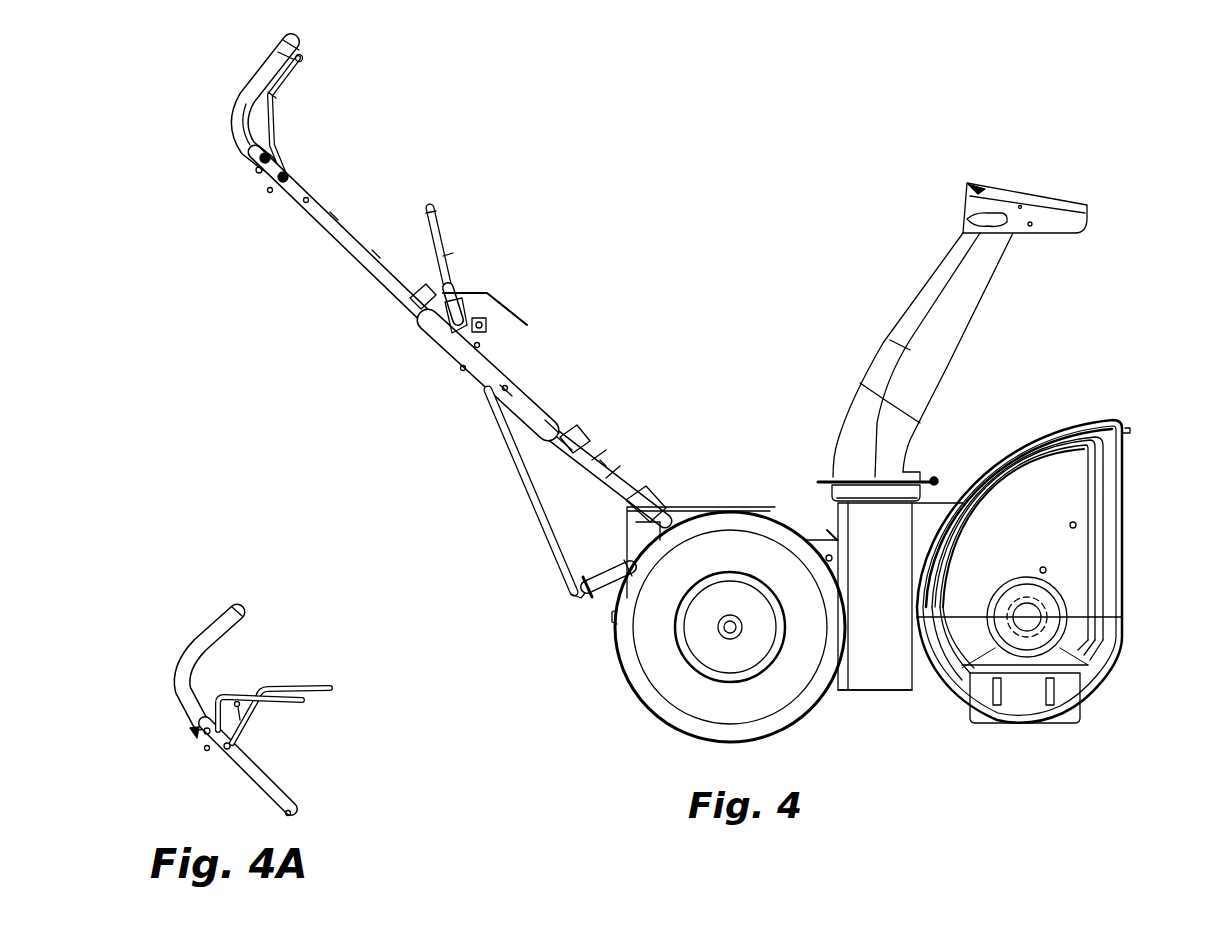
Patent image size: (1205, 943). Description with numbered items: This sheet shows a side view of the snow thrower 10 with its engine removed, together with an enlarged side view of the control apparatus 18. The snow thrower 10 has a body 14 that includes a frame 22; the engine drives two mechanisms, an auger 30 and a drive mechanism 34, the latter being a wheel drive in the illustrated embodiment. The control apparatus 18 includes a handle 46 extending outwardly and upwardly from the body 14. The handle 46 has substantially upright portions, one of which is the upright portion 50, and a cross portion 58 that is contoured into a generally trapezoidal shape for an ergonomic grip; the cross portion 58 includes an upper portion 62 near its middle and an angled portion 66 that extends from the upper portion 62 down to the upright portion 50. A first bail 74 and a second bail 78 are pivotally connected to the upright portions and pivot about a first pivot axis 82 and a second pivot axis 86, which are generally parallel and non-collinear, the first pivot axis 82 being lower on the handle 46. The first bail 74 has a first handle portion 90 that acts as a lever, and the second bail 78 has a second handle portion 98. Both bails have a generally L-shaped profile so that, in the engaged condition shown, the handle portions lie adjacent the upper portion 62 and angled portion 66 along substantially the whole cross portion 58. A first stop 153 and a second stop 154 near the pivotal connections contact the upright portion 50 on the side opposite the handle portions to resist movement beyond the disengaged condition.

In FIG. 4, the snow thrower 10 is at (804, 278).
In FIG. 4, the body 14 is at (866, 716).
In FIG. 4, the control apparatus 18 is at (411, 110).
In FIG. 4A, the control apparatus 18 is at (358, 701).
In FIG. 4, the frame 22 is at (773, 504).
In FIG. 4, the auger 30 is at (1125, 543).
In FIG. 4, the drive mechanism 34 is at (622, 663).
In FIG. 4, the handle 46 is at (406, 208).
In FIG. 4, the upright portion 50 is at (360, 278).
In FIG. 4A, the upright portion 50 is at (270, 783).
In FIG. 4, the cross portion 58 is at (269, 98).
In FIG. 4A, the cross portion 58 is at (228, 630).
In FIG. 4, the upper portion 62 is at (306, 47).
In FIG. 4A, the upper portion 62 is at (248, 607).
In FIG. 4, the angled portion 66 is at (258, 70).
In FIG. 4A, the angled portion 66 is at (203, 636).
In FIG. 4, the first bail 74 is at (323, 114).
In FIG. 4A, the first bail 74 is at (274, 688).
In FIG. 4, the second bail 78 is at (303, 72).
In FIG. 4A, the second bail 78 is at (277, 701).
In FIG. 4, the first pivot axis 82 is at (290, 175).
In FIG. 4A, the first pivot axis 82 is at (232, 747).
In FIG. 4, the second pivot axis 86 is at (258, 161).
In FIG. 4A, the second pivot axis 86 is at (190, 728).
In FIG. 4, the first handle portion 90 is at (278, 95).
In FIG. 4, the second handle portion 98 is at (248, 104).
In FIG. 4, the first stop 153 is at (269, 194).
In FIG. 4A, the first stop 153 is at (207, 752).
In FIG. 4, the second stop 154 is at (256, 172).
In FIG. 4A, the second stop 154 is at (203, 737).